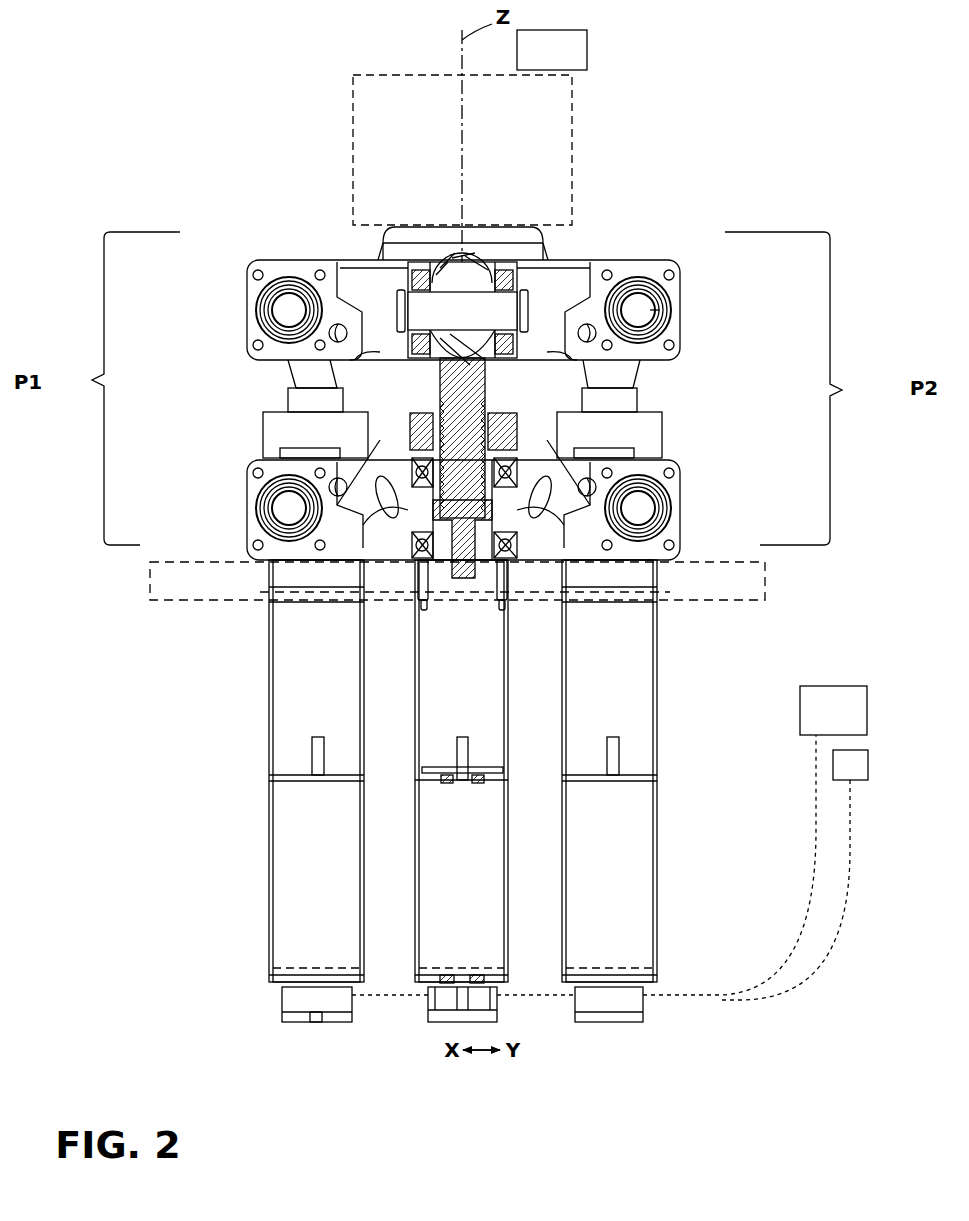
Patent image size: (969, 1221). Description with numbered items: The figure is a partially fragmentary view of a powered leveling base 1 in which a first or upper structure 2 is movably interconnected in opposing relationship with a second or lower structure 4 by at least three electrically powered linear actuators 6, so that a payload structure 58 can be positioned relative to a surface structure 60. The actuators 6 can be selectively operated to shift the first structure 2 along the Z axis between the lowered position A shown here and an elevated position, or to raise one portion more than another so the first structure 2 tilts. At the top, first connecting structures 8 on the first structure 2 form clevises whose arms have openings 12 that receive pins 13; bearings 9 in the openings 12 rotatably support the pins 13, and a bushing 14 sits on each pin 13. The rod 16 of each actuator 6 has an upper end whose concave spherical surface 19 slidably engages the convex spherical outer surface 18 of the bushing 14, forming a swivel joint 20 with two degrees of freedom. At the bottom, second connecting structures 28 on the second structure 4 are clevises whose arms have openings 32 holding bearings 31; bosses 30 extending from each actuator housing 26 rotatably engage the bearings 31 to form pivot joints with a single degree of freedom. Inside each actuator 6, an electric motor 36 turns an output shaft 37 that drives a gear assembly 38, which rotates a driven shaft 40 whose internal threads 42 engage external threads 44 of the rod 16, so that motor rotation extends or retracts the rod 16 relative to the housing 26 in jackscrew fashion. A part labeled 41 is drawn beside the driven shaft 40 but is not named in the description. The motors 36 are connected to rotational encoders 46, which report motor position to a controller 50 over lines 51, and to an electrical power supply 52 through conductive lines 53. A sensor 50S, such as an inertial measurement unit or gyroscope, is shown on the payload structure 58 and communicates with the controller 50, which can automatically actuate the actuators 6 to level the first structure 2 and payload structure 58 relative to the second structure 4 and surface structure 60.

The powered leveling base 1 is at (668, 212).
The first structure 2 is at (688, 276).
The second structure 4 is at (688, 478).
The linear actuator 6 is at (462, 771).
The first connecting structure 8 is at (463, 283).
The bearing 9 is at (412, 285).
The opening 12 is at (398, 283).
The pin 13 is at (282, 308).
The bushing 14 is at (497, 280).
The rod 16 is at (292, 368).
The convex spherical outer surface 18 is at (480, 268).
The concave spherical surface 19 is at (404, 268).
The swivel joint 20 is at (525, 262).
The housing 26 is at (270, 808).
The second connecting structure 28 is at (253, 542).
The boss 30 is at (263, 495).
The bearing 31 is at (410, 418).
The opening 32 is at (410, 448).
The electric motor 36 is at (272, 875).
The output shaft 37 is at (312, 750).
The gear assembly 38 is at (270, 652).
The driven shaft 40 is at (503, 410).
The left nut 41 is at (430, 410).
The internal threads 42 is at (468, 385).
The external threads 44 is at (445, 388).
The rotational encoder 46 is at (282, 992).
The controller 50 is at (833, 710).
The sensor 50S is at (552, 50).
The line 51 is at (798, 820).
The electrical power supply 52 is at (850, 765).
The conductive line 53 is at (852, 862).
The payload structure 58 is at (350, 118).
The surface structure 60 is at (212, 603).
The lowered position A is at (660, 318).